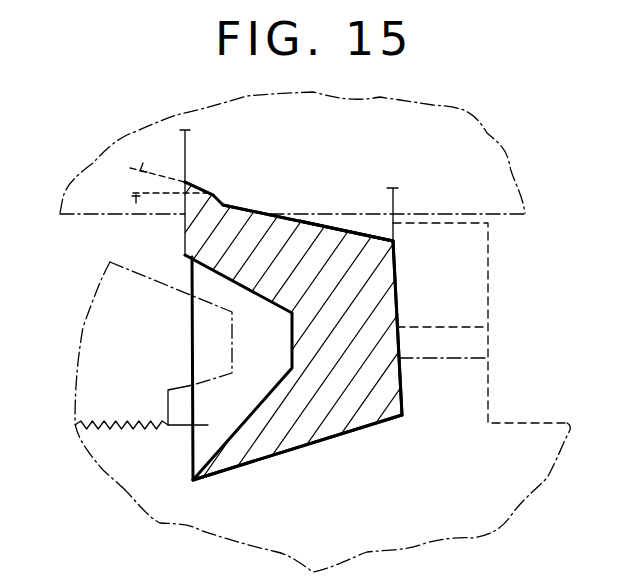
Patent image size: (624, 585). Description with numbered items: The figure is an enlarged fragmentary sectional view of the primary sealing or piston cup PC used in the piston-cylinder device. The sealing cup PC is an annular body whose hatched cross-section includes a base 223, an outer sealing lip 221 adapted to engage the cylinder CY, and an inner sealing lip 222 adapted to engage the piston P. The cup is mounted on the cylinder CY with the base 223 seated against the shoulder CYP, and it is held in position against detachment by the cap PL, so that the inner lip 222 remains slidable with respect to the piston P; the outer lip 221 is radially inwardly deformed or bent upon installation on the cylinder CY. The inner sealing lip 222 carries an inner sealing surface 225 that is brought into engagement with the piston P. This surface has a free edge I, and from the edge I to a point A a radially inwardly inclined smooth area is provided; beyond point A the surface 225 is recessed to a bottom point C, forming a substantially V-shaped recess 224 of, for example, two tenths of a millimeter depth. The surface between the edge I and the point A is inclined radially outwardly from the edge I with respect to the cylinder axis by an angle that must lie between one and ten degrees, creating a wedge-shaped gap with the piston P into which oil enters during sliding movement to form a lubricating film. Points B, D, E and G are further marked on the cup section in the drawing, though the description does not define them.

The outer sealing lip 221 is at (213, 453).
The inner sealing lip 222 is at (282, 235).
The base 223 is at (382, 303).
The V-shaped recess 224 is at (217, 197).
The inner sealing surface 225 is at (332, 230).
The piston P is at (468, 127).
The cap PL is at (98, 392).
The piston cup PC is at (320, 403).
The cylinder CY is at (248, 525).
The shoulder CYP is at (473, 320).
The free edge I is at (185, 182).
The point A is at (213, 193).
The point B(F) B is at (395, 242).
The bottom point C is at (223, 205).
The point D is at (185, 255).
The point E is at (290, 317).
The point G is at (405, 417).